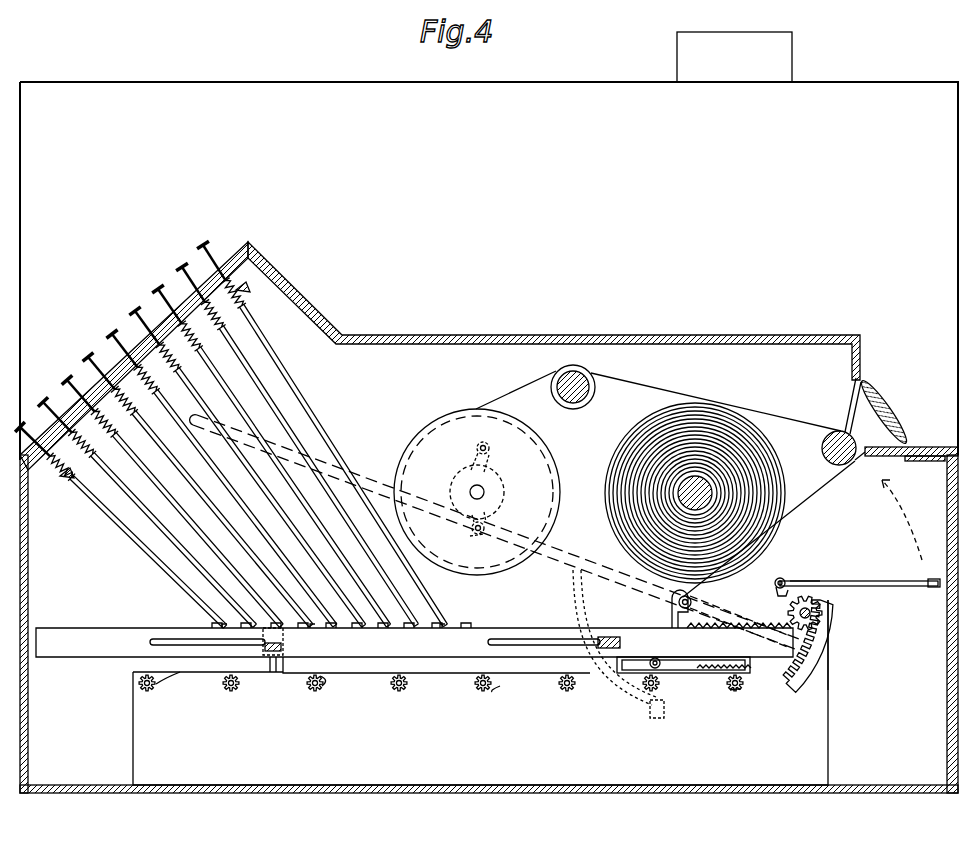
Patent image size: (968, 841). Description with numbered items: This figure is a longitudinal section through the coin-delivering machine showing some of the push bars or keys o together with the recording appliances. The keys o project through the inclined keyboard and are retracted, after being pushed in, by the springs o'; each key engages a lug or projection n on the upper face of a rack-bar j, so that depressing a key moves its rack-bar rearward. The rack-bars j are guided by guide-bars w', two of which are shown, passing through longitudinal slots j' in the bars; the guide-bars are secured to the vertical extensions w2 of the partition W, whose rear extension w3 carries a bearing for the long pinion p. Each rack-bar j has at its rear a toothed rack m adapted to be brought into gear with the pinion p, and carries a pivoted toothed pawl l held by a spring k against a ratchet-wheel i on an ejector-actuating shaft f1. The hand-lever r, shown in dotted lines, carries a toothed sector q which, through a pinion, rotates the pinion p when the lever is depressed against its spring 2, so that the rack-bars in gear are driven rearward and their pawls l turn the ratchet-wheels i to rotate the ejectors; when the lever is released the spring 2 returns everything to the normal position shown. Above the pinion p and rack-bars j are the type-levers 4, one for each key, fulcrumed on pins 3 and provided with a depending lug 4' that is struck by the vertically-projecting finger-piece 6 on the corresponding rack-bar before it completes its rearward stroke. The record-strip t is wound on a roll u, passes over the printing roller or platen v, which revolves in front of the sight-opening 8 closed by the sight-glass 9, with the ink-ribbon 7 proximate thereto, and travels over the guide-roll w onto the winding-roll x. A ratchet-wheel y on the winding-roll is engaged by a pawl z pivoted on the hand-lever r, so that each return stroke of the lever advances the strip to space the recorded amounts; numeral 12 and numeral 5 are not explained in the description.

The upper box 12 is at (734, 57).
The keys o is at (233, 431).
The springs o' is at (172, 403).
The rack-bars j is at (414, 623).
The longitudinal slots j' is at (372, 617).
The lug or projection n is at (243, 624).
The guide-bars w' is at (442, 646).
The vertical extensions w2 is at (268, 676).
The toothed or rack pawls l is at (657, 660).
The springs k is at (701, 664).
The pinion or ratchet-wheel i is at (226, 688).
The shaft f1 is at (735, 692).
The spring 2 is at (572, 608).
The finger-piece 6 is at (671, 606).
The rack m is at (726, 622).
The hand-lever r is at (392, 480).
The long pinion p is at (824, 613).
The toothed sector q is at (830, 658).
The extension w3 is at (832, 630).
The type-levers 4 is at (860, 597).
The pins 3 is at (786, 582).
The depending lug 4' is at (814, 569).
The direction arrow 5 is at (932, 580).
The ink-ribbon 7 is at (853, 463).
The guide-roll w is at (579, 394).
The printing roller or platen v is at (824, 456).
The sight-opening 8 is at (857, 410).
The sight-glass or lens 9 is at (896, 418).
The record-strip t is at (495, 400).
The roll u is at (695, 493).
The winding-roll x is at (477, 492).
The ratchet-wheel y is at (504, 484).
The pawl z is at (494, 522).
The partition W is at (480, 770).